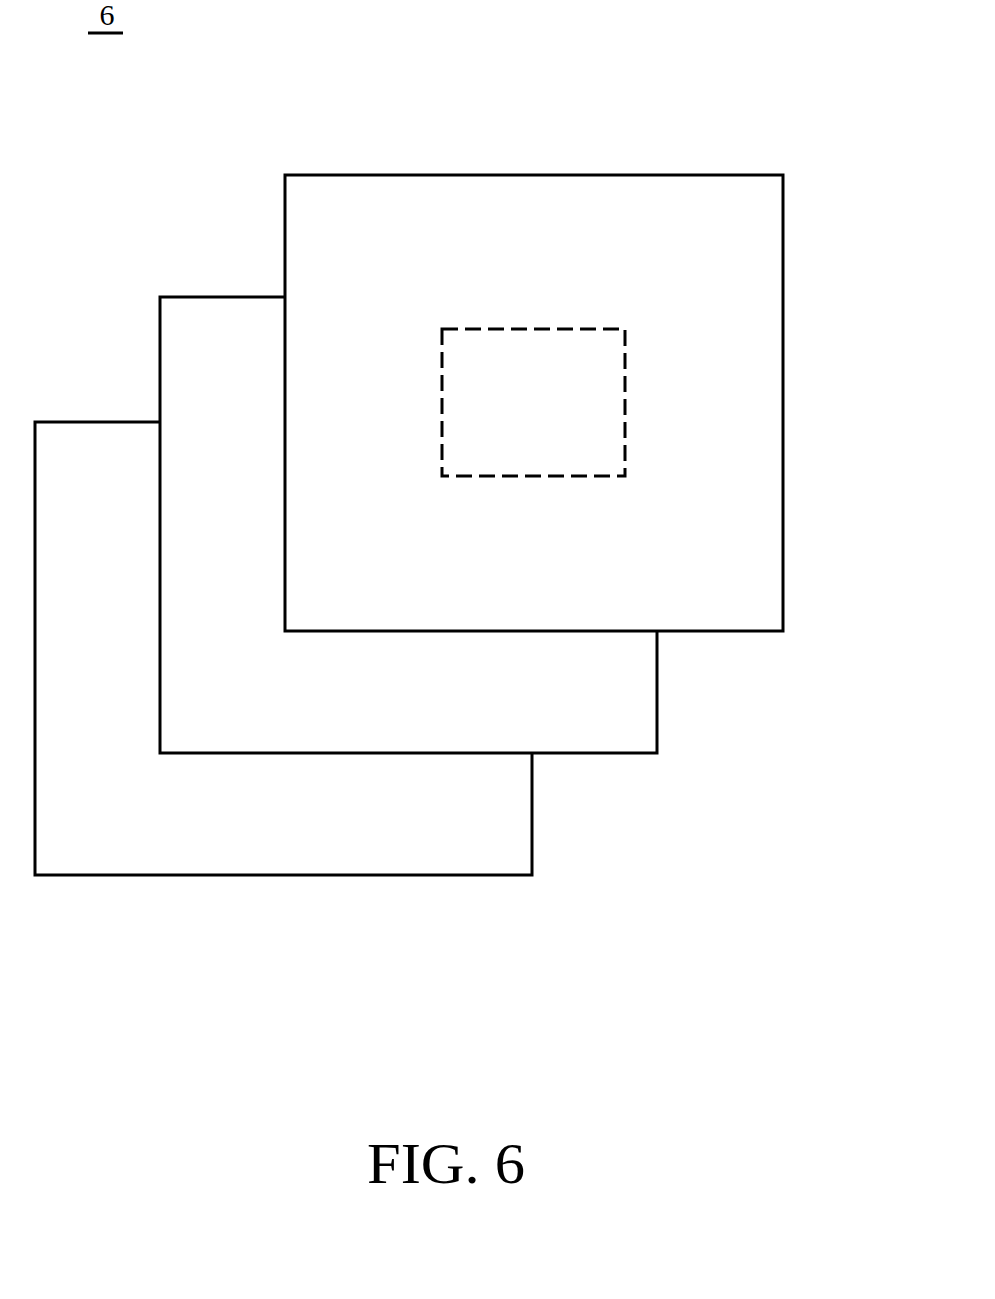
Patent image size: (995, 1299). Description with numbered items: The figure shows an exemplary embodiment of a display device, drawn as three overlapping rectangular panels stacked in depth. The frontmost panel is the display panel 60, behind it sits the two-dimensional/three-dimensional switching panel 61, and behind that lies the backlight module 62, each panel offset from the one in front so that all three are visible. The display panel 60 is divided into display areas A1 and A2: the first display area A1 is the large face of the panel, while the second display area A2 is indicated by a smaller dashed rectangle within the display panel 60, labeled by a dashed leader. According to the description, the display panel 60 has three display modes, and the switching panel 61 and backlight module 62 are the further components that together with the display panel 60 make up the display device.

The display panel 60 is at (783, 272).
The 2-D/3-D switching panel 61 is at (657, 690).
The backlight module 62 is at (532, 813).
The display area A1 is at (536, 208).
The display area A2 is at (607, 403).